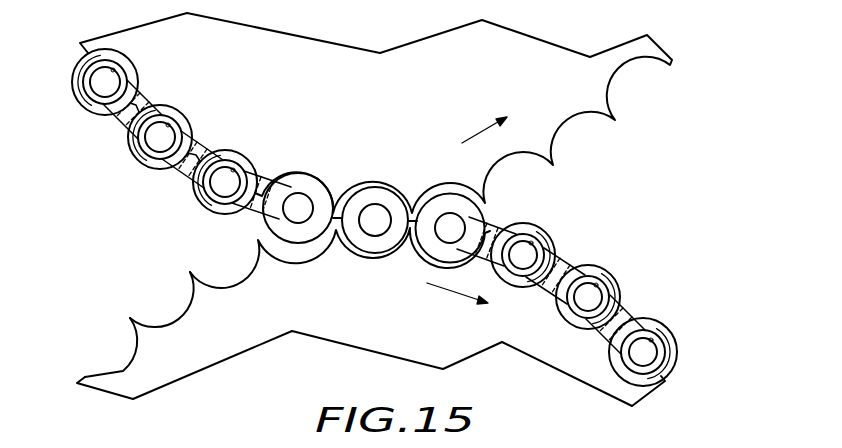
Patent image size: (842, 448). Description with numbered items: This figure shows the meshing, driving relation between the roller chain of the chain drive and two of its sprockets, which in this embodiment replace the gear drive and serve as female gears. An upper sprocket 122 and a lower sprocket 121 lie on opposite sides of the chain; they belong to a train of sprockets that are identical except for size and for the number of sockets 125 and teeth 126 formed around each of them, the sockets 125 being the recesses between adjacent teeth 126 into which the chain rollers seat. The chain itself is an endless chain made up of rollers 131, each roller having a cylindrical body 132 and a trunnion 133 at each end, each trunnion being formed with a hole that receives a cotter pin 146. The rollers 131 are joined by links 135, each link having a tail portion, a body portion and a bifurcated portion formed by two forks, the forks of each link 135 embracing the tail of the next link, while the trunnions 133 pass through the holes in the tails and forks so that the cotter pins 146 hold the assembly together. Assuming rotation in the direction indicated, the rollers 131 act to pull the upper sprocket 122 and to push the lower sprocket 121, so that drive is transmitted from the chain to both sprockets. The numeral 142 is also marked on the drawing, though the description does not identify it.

The sprocket 121 is at (347, 317).
The sprocket 122 is at (400, 122).
The socket 125 is at (123, 371).
The tooth 126 is at (137, 316).
The roller 131 is at (124, 142).
The cylindrical body 132 is at (260, 218).
The trunnion 133 is at (157, 148).
The link 135 is at (553, 265).
The roller 142 is at (613, 283).
The cotter pin 146 is at (567, 201).